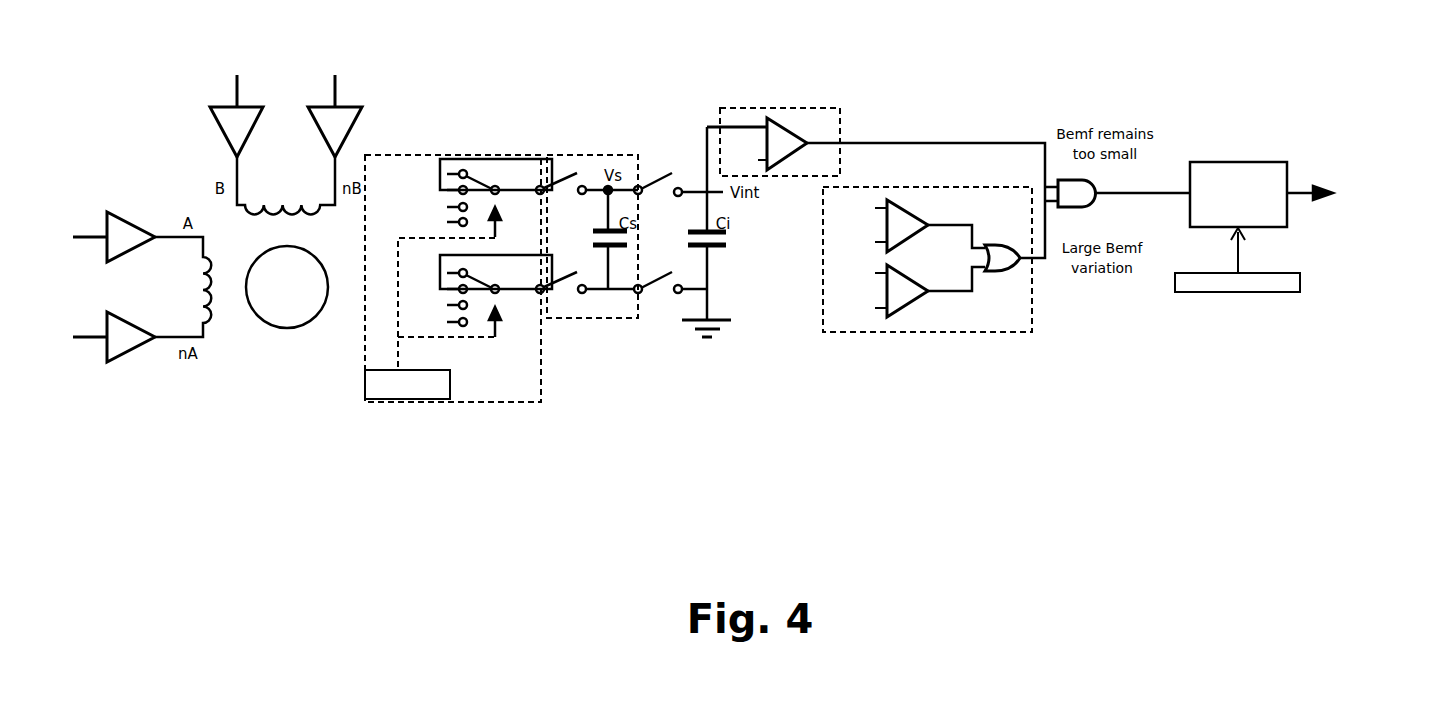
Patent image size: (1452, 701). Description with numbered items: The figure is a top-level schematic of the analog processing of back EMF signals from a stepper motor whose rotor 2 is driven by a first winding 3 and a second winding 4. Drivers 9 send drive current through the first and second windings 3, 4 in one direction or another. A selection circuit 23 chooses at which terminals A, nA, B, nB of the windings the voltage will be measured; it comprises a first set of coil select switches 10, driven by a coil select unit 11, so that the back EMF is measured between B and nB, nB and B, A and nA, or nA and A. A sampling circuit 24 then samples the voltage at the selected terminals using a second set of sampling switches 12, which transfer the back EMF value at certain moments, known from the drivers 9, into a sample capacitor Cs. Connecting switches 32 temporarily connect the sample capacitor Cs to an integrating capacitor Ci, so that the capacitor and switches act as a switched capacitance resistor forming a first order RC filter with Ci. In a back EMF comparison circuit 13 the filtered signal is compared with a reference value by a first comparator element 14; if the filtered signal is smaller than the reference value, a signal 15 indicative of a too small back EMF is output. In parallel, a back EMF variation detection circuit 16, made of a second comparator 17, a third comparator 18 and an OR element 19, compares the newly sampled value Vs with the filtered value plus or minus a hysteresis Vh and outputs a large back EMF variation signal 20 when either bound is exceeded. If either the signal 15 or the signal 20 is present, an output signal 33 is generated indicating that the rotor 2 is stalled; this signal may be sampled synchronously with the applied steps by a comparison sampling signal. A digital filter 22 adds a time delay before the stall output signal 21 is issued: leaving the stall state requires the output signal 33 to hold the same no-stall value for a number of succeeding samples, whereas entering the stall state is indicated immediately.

The rotor 2 is at (278, 322).
The first winding 3 is at (200, 290).
The second winding 4 is at (283, 205).
The drivers 9 is at (127, 337).
The coil select switches 10 is at (480, 180).
The coil select unit 11 is at (383, 390).
The sampling switches 12 is at (555, 182).
The back EMF comparison circuit 13 is at (743, 107).
The first comparator element 14 is at (778, 140).
The signal indicative of a too small back EMF 15 is at (893, 142).
The back EMF variation detection circuit 16 is at (912, 333).
The second comparator 17 is at (887, 225).
The third comparator 18 is at (902, 288).
The OR element 19 is at (1003, 257).
The large back EMF variation signal 20 is at (1048, 228).
The stall output signal 21 is at (1300, 198).
The digital filter 22 is at (1235, 160).
The selection circuit 23 is at (492, 403).
The sampling circuit 24 is at (587, 320).
The connecting switches 32 is at (654, 166).
The output signal 33 is at (1130, 190).